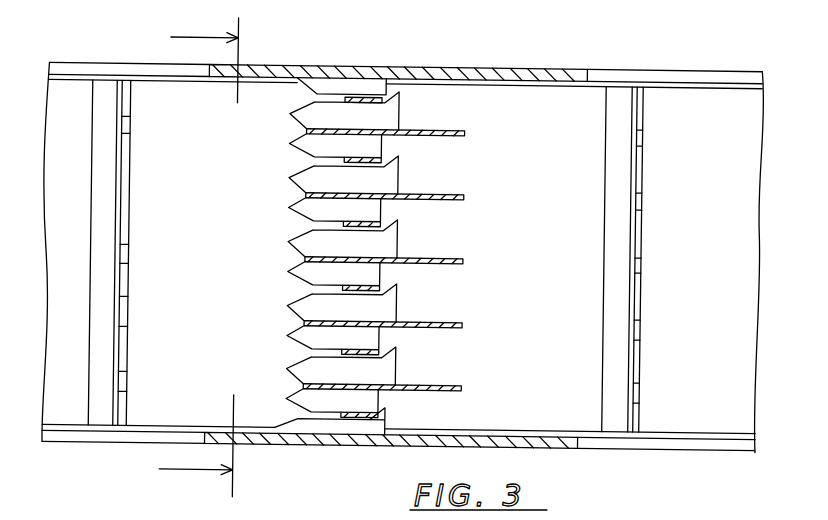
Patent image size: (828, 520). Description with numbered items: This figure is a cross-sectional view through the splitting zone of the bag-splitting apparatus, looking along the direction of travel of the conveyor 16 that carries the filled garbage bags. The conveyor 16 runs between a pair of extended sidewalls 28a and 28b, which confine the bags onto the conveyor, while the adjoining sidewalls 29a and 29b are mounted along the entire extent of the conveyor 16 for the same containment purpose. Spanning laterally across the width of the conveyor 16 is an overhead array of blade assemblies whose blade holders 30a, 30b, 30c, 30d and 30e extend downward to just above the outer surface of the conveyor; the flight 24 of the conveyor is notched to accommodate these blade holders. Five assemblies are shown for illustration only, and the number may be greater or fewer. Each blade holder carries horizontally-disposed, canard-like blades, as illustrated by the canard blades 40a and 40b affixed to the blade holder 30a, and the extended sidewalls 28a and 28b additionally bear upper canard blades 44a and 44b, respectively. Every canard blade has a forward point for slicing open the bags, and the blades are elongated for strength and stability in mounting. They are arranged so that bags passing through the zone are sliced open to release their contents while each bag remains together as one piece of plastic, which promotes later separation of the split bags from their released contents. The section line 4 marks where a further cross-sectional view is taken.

The section line 4- 4 is at (217, 257).
The conveyor 16 is at (716, 242).
The flight 24 is at (128, 268).
The extended sidewall 28a is at (373, 446).
The extended sidewall 28b is at (440, 67).
The sidewall 29a is at (663, 447).
The sidewall 29b is at (650, 71).
The blade holder 30a is at (359, 370).
The blade holder 30b is at (465, 305).
The blade holder 30c is at (461, 258).
The blade holder 30d is at (461, 194).
The blade holder 30e is at (466, 129).
The canard blade 40a is at (289, 389).
The canard blade 40b is at (300, 352).
The upper canard blade 44a is at (382, 418).
The upper canard blade 44b is at (326, 90).